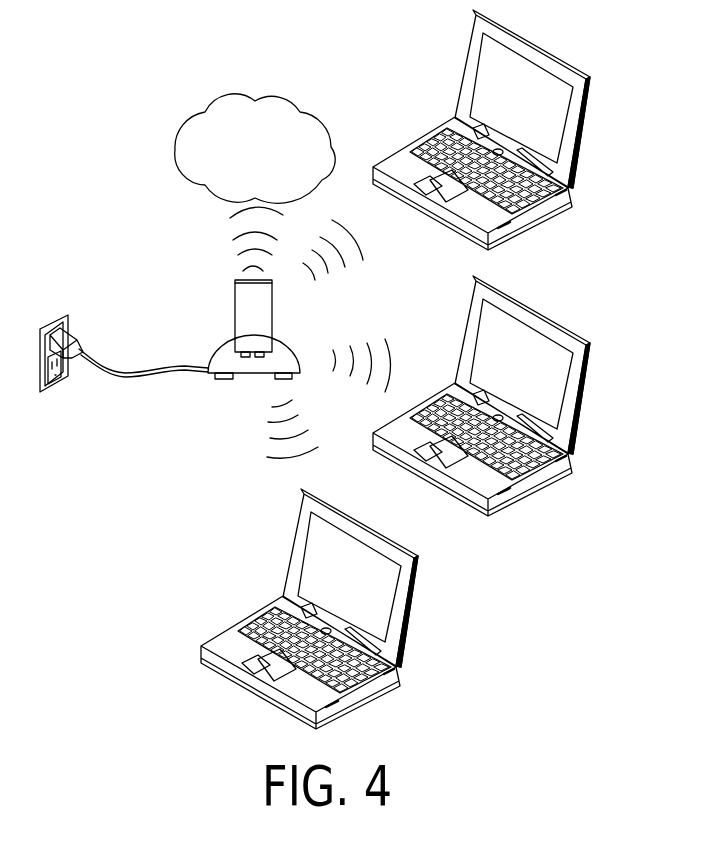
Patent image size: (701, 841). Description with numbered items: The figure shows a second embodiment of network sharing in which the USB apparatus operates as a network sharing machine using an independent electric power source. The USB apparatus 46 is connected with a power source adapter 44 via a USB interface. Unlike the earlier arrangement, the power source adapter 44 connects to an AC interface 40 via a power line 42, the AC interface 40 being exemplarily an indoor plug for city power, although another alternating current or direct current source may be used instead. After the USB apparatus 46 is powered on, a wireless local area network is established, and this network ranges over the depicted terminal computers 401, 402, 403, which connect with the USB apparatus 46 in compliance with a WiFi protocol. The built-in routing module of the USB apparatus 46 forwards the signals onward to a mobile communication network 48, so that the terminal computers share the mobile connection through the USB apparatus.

The AC interface 40 is at (56, 327).
The power line 42 is at (143, 371).
The power source adapter 44 is at (248, 370).
The USB apparatus 46 is at (266, 306).
The mobile communication network 48 is at (278, 97).
The terminal computer 401 is at (527, 53).
The terminal computer 402 is at (527, 318).
The terminal computer 403 is at (407, 591).